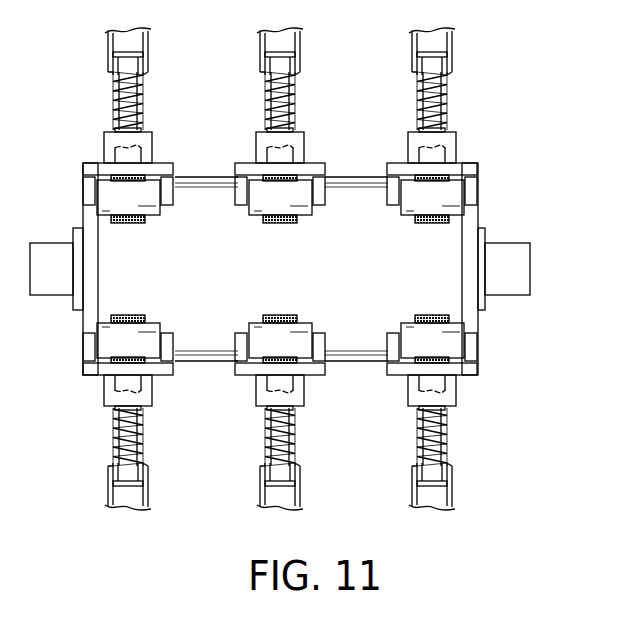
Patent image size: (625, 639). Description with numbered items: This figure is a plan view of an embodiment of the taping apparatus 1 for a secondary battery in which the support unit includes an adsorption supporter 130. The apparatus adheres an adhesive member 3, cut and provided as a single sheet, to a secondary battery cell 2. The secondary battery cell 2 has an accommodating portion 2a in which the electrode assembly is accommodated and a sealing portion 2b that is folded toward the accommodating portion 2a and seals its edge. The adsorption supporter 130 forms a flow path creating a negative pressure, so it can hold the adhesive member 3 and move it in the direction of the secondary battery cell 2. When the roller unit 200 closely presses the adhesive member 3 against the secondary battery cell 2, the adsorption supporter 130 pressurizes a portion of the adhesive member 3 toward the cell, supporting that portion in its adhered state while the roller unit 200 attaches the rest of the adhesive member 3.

The taping apparatus 1 is at (490, 125).
The adsorption supporter 130 is at (452, 101).
The roller unit 200 is at (464, 159).
The secondary battery cell 2 is at (315, 269).
The accommodating portion 2a is at (447, 280).
The sealing portion 2b is at (352, 187).
The adhesive member 3 is at (452, 317).